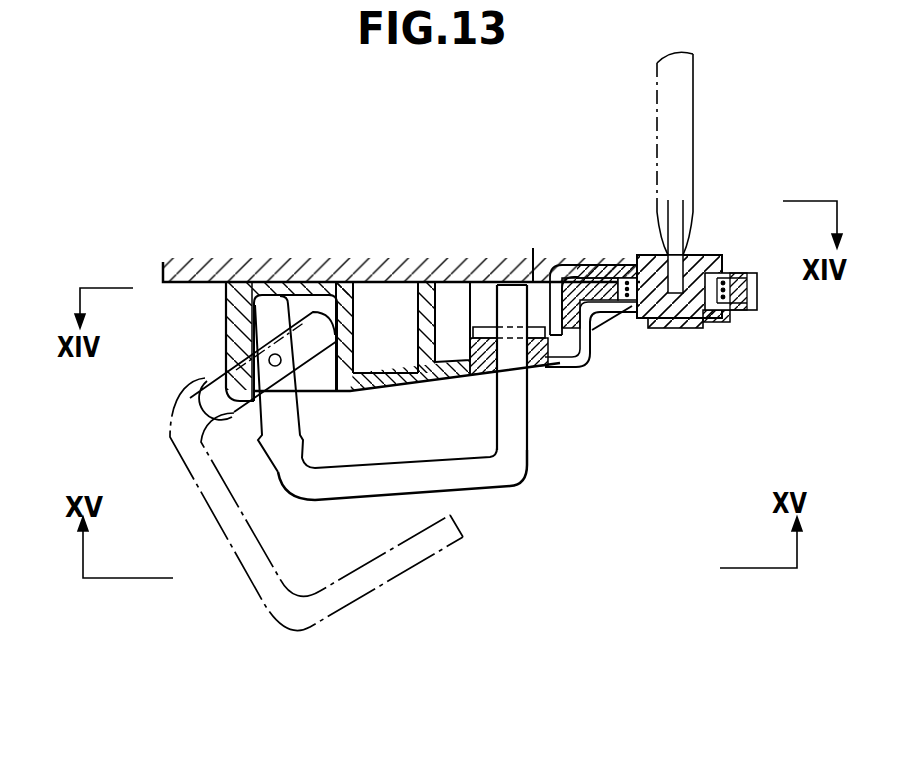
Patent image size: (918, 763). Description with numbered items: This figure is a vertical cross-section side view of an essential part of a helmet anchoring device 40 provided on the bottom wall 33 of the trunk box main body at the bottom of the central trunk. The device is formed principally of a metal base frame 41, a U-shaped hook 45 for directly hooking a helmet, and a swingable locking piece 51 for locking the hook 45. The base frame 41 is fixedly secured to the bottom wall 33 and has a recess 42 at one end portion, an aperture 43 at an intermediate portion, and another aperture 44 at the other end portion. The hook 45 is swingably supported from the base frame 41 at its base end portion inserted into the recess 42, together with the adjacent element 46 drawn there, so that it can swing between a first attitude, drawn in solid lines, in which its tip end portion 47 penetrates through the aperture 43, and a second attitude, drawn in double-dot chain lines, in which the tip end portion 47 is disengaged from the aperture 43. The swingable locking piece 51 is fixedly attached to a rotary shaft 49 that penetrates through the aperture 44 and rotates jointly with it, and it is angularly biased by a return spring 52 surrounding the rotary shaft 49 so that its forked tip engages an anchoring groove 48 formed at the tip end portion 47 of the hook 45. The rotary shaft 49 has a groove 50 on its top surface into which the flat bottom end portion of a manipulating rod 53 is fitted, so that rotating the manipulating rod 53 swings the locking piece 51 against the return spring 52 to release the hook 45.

The bottom wall 33 is at (315, 262).
The helmet anchoring device 40 is at (676, 259).
The base frame 41 is at (262, 318).
The recess 42 is at (322, 382).
The aperture 43 is at (484, 386).
The aperture 44 is at (690, 328).
The U-shaped hook 45 is at (498, 492).
The lever 46 is at (278, 318).
The tip end portion 47 is at (502, 330).
The anchoring groove 48 is at (540, 280).
The rotary shaft 49 is at (660, 328).
The groove 50 is at (679, 275).
The swingable locking piece 51 is at (588, 265).
The return spring 52 is at (730, 275).
The manipulating rod 53 is at (697, 153).